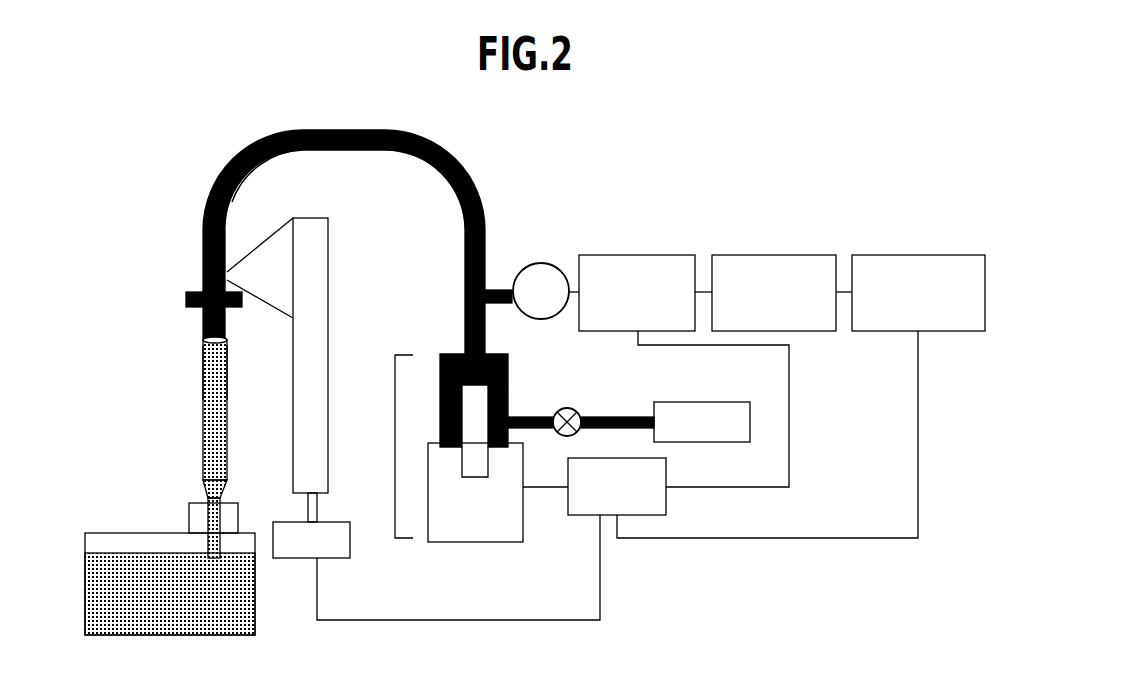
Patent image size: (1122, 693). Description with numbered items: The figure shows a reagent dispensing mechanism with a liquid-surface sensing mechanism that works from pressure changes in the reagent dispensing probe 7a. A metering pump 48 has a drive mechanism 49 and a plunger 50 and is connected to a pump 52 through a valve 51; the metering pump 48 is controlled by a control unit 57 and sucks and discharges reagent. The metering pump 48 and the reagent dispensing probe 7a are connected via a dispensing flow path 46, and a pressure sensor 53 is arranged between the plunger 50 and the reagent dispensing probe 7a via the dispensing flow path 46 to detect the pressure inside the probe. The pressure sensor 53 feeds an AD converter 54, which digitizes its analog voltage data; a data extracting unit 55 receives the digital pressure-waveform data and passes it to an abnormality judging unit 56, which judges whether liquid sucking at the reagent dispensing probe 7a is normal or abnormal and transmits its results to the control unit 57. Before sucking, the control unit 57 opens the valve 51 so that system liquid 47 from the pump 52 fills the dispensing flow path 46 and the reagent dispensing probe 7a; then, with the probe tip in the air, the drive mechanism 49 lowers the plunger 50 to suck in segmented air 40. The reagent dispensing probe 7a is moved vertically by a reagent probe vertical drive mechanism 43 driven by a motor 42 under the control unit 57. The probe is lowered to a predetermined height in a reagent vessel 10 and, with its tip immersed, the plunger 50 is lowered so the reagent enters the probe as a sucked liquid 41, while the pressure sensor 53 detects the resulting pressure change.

The reagent vessel 10 is at (135, 545).
The reagent dispensing probe 7a is at (203, 392).
The segmented air 40 is at (207, 338).
The sucked liquid 41 is at (213, 450).
The motor 42 is at (297, 545).
The reagent probe vertical drive mechanism 43 is at (315, 287).
The dispensing flow path 46 is at (335, 129).
The system liquid 47 is at (232, 202).
The metering pump 48 is at (395, 448).
The drive mechanism 49 is at (474, 518).
The plunger 50 is at (465, 408).
The valve 51 is at (563, 406).
The pump 52 is at (700, 402).
The pressure sensor 53 is at (540, 263).
The AD converter 54 is at (633, 255).
The data extracting unit 55 is at (768, 255).
The abnormality judging unit 56 is at (913, 255).
The control unit 57 is at (580, 515).